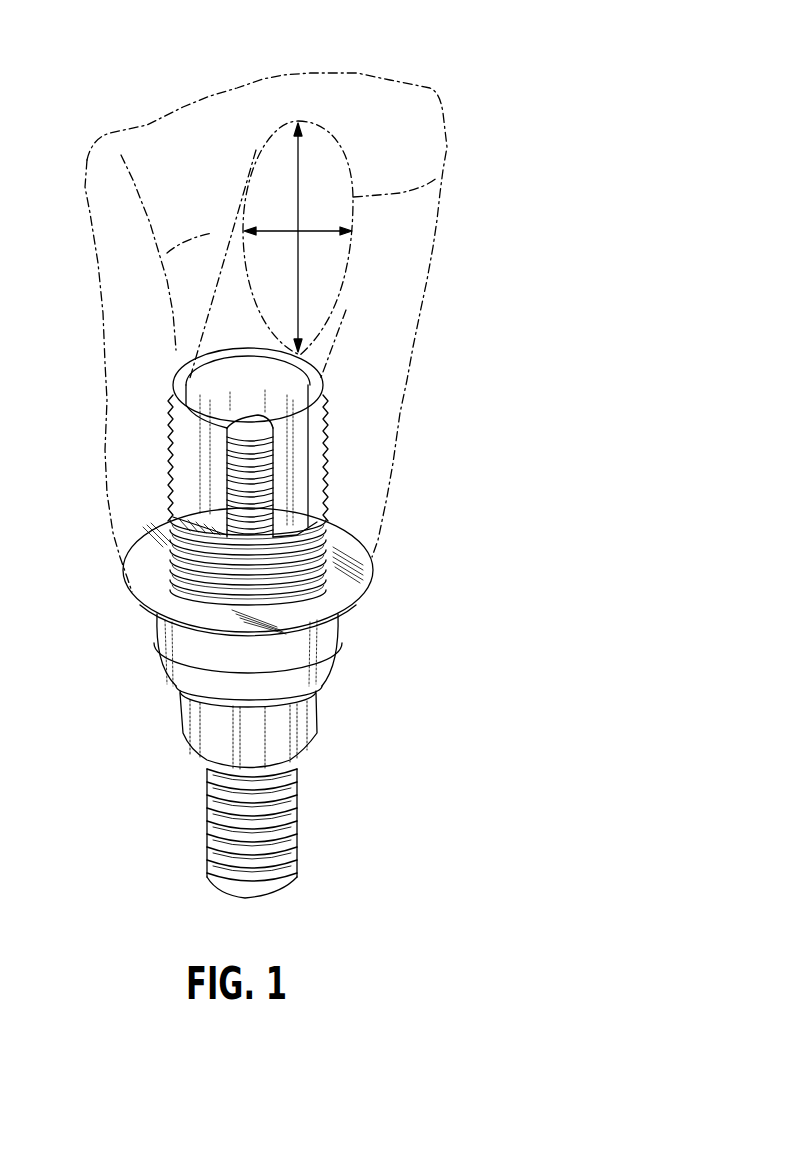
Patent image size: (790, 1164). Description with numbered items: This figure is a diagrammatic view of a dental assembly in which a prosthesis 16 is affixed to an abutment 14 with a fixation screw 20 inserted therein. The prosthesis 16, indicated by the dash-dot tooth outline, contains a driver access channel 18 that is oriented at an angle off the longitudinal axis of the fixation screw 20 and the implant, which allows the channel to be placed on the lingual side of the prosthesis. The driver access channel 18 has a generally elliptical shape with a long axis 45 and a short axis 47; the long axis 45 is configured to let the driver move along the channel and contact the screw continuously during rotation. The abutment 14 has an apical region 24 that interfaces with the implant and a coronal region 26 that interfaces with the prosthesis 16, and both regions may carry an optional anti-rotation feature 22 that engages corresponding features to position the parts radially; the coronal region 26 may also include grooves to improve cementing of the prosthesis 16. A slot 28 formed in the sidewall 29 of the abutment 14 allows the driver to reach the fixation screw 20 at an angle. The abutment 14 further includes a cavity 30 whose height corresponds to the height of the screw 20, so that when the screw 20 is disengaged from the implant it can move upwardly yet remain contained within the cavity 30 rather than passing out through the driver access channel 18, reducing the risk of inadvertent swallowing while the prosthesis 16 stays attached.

The abutment 14 is at (342, 647).
The prosthesis 16 is at (388, 80).
The driver access channel 18 is at (320, 190).
The fixation screw 20 is at (207, 806).
The anti-rotation feature 22 is at (193, 475).
The apical region 24 is at (320, 727).
The coronal region 26 is at (308, 376).
The slot 28 is at (315, 468).
The sidewall 29 is at (281, 393).
The cavity 30 is at (220, 387).
The long axis 45 is at (274, 231).
The short axis 47 is at (302, 252).